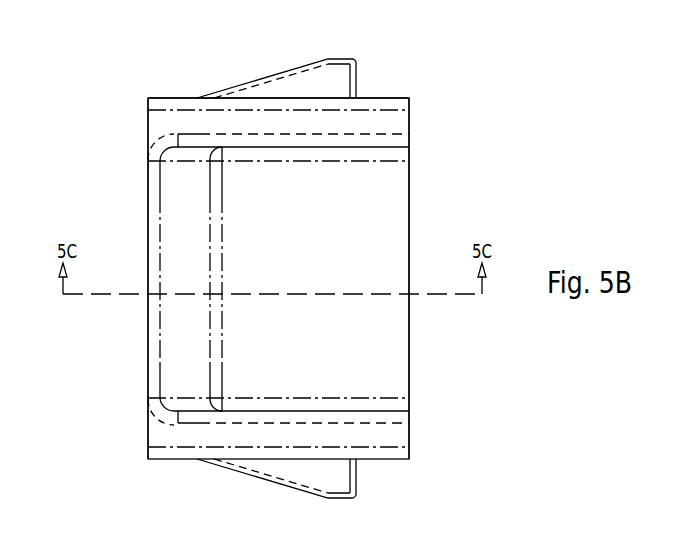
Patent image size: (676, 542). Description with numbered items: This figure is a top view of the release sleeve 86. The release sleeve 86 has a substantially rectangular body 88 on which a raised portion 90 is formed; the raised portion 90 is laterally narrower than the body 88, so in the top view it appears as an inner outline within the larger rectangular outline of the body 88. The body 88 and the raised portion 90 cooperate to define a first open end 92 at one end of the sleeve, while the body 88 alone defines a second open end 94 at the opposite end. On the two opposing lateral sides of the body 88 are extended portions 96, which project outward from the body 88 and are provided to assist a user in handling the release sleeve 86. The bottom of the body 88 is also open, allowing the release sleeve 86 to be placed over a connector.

The release sleeve 86 is at (130, 100).
The body 88 is at (383, 98).
The raised portion 90 is at (197, 147).
The first open end 92 is at (409, 191).
The second open end 94 is at (148, 220).
The extended portions 96 is at (280, 85).